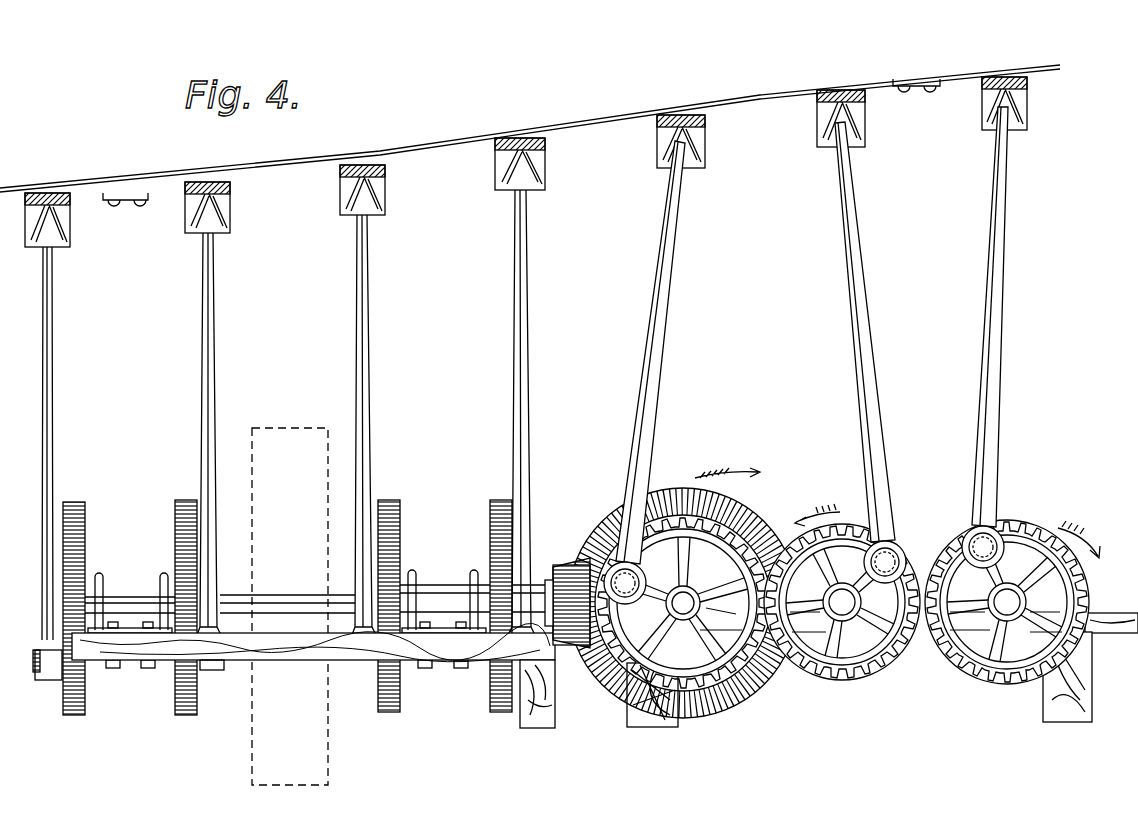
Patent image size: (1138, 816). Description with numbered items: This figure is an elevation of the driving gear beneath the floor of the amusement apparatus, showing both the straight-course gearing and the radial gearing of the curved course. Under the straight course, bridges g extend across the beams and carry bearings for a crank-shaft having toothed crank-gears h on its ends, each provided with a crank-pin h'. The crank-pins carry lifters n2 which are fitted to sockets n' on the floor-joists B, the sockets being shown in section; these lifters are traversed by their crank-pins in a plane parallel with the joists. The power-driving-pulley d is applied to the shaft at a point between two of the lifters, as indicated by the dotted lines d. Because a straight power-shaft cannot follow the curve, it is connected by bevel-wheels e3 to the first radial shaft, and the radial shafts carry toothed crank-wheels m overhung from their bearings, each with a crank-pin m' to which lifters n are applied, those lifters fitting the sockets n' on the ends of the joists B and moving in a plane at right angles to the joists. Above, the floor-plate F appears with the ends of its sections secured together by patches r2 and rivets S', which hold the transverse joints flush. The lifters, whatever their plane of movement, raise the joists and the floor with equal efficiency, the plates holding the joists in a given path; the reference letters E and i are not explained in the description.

The overhead beam E is at (560, 128).
The floor-joist B is at (340, 212).
The socket n' is at (381, 192).
The rivet S' is at (123, 218).
The patch r2 is at (928, 108).
The lifter n2 is at (288, 415).
The lifter n is at (826, 335).
The power-driving-pulley d is at (290, 591).
The toothed crank-gear h is at (287, 594).
The bridge g is at (432, 622).
The bevel-wheels e3 is at (588, 548).
The toothed crank-wheel m is at (776, 536).
The crank-pin m' is at (1021, 523).
The gear wheel i is at (690, 605).
The crank-pin h' is at (134, 686).